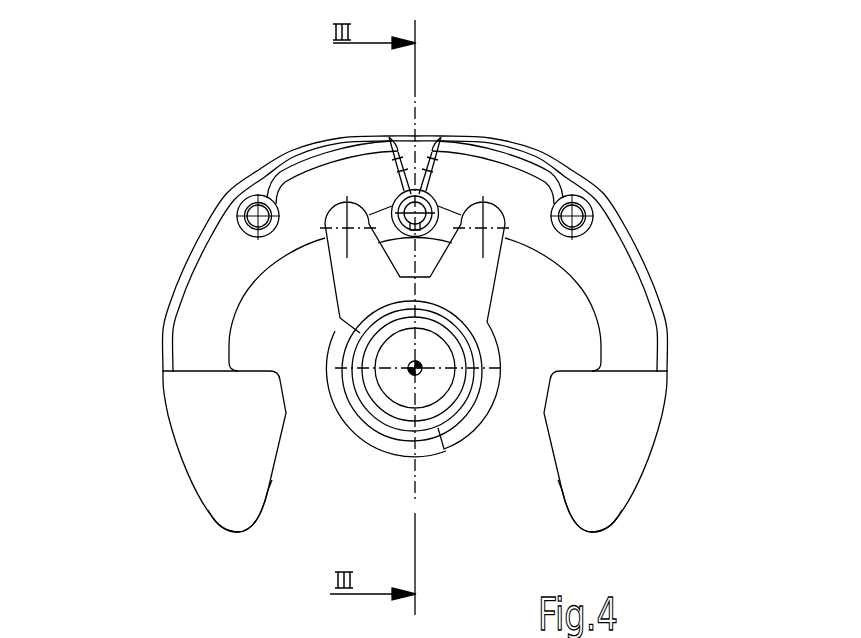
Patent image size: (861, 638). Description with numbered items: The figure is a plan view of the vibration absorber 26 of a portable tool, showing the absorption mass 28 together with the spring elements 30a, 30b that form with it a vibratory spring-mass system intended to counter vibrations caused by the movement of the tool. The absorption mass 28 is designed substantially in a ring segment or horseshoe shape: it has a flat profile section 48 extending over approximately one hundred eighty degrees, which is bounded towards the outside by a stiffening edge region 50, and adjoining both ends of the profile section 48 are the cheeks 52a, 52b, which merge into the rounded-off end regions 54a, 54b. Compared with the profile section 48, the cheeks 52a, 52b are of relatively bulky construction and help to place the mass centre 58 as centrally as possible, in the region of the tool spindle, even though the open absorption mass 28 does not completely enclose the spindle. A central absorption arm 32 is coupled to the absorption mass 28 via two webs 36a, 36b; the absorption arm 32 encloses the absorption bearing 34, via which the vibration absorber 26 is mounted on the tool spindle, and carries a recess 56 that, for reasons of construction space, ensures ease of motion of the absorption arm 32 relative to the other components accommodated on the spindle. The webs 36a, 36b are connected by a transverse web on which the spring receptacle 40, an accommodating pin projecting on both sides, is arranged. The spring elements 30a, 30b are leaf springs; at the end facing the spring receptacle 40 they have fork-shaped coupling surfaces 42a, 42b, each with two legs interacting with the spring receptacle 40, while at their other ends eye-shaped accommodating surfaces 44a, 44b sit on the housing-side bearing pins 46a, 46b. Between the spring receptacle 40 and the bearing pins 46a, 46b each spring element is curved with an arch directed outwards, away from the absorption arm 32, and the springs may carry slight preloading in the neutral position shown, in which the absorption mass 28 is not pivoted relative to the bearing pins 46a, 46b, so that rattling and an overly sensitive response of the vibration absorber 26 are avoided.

The vibration absorber 26 is at (480, 112).
The absorption mass 28 is at (165, 328).
The spring element 30a is at (558, 162).
The spring element 30b is at (297, 157).
The absorption arm 32 is at (485, 353).
The absorption bearing 34 is at (392, 414).
The web 36a is at (472, 298).
The web 36b is at (360, 290).
The spring receptacle 40 is at (418, 188).
The coupling surface 42a is at (441, 190).
The coupling surface 42b is at (394, 195).
The accommodating surface 44a is at (593, 210).
The accommodating surface 44b is at (253, 234).
The bearing pin 46a is at (567, 236).
The bearing pin 46b is at (253, 205).
The profile section 48 is at (613, 292).
The stiffening edge region 50 is at (631, 248).
The cheek 52a is at (623, 440).
The cheek 52b is at (218, 443).
The rounded-off end region 54a is at (603, 530).
The rounded-off end region 54b is at (230, 533).
The recess 56 is at (348, 410).
The mass centre 58 is at (418, 373).